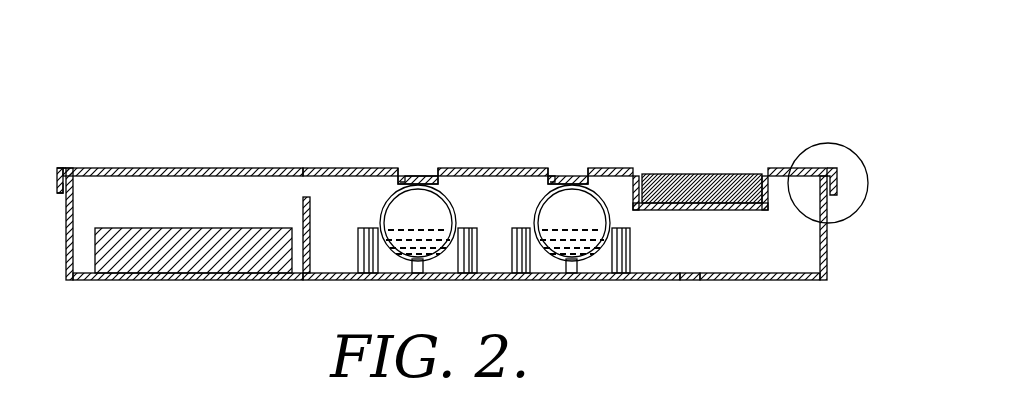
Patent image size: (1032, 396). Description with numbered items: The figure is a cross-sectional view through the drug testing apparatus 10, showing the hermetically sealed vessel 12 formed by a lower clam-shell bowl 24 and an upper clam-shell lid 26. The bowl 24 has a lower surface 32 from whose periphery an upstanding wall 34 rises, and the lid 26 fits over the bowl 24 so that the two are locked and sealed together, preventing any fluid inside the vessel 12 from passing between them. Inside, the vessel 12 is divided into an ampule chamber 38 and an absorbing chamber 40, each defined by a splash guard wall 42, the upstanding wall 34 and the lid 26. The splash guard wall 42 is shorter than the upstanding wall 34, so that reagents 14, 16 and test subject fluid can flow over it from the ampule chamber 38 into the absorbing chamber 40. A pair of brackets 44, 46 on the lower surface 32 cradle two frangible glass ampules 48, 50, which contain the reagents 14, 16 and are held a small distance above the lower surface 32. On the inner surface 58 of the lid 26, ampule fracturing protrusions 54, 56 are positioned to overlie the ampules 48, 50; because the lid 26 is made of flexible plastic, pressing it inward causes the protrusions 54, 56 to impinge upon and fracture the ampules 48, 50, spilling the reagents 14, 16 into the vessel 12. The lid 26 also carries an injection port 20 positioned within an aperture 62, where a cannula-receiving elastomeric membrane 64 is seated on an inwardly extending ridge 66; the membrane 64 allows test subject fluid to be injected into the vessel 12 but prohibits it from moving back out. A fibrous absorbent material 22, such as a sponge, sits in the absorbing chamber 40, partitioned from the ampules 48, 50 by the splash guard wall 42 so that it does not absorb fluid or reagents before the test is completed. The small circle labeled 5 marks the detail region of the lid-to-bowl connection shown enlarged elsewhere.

The drug testing apparatus 10 is at (136, 60).
The hermetically sealed vessel 12 is at (727, 285).
The reagent 14 is at (433, 228).
The reagent 16 is at (557, 225).
The injection port 20 is at (662, 166).
The absorbent material 22 is at (220, 226).
The bowl 24 is at (97, 279).
The lid 26 is at (152, 167).
The lower surface 32 is at (690, 274).
The upstanding wall 34 is at (67, 237).
The ampule chamber 38 is at (363, 192).
The absorbing chamber 40 is at (169, 199).
The splash guard wall 42 is at (312, 210).
The bracket 44 is at (356, 258).
The bracket 46 is at (508, 258).
The frangible glass ampule 48 is at (445, 190).
The frangible glass ampule 50 is at (605, 187).
The ampule fracturing protrusion 54 is at (549, 181).
The ampule fracturing protrusion 56 is at (398, 181).
The inner surface 58 is at (284, 177).
The aperture 62 is at (742, 170).
The elastomeric membrane 64 is at (714, 173).
The inwardly extending ridge 66 is at (650, 211).
The detail circle FIG. 5 is at (868, 190).